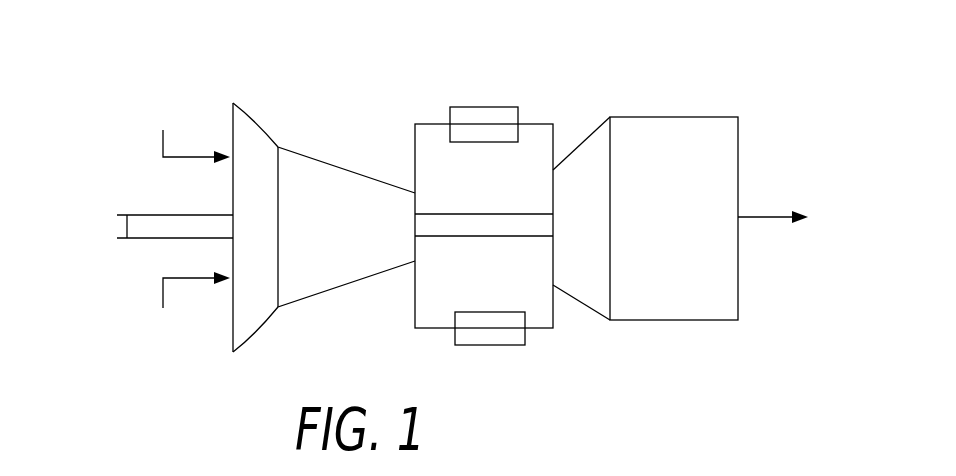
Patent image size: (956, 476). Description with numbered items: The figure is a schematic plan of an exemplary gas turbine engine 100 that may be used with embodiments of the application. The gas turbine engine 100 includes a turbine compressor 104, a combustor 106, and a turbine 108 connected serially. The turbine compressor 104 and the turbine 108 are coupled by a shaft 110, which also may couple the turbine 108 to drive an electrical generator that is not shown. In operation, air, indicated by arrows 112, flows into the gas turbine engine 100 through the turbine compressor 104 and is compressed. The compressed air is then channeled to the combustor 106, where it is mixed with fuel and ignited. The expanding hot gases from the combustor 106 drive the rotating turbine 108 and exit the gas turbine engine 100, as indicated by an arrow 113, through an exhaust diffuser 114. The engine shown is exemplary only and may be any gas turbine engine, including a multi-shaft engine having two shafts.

The gas turbine engine 100 is at (122, 92).
The turbine compressor 104 is at (313, 157).
The combustor 106 is at (485, 123).
The turbine 108 is at (577, 198).
The shaft 110 is at (147, 227).
The arrows 112 is at (177, 157).
The arrow 113 is at (755, 218).
The exhaust diffuser 114 is at (702, 182).